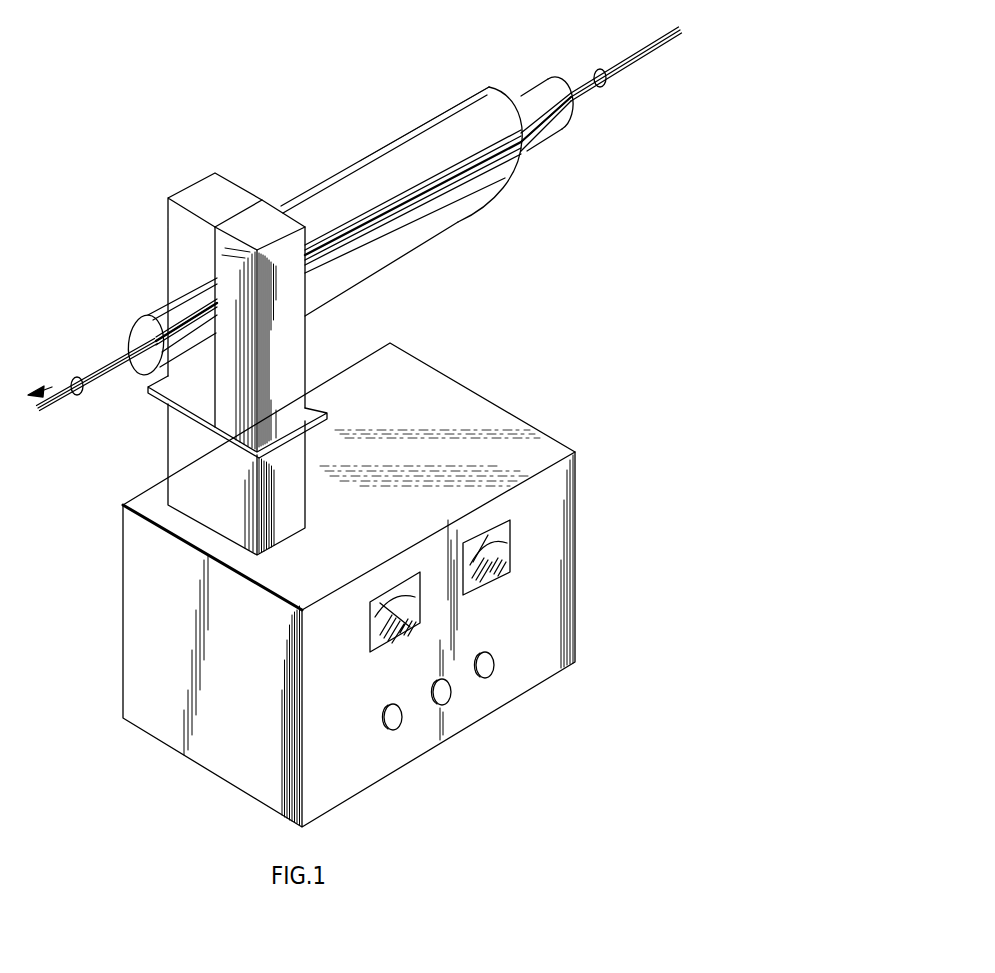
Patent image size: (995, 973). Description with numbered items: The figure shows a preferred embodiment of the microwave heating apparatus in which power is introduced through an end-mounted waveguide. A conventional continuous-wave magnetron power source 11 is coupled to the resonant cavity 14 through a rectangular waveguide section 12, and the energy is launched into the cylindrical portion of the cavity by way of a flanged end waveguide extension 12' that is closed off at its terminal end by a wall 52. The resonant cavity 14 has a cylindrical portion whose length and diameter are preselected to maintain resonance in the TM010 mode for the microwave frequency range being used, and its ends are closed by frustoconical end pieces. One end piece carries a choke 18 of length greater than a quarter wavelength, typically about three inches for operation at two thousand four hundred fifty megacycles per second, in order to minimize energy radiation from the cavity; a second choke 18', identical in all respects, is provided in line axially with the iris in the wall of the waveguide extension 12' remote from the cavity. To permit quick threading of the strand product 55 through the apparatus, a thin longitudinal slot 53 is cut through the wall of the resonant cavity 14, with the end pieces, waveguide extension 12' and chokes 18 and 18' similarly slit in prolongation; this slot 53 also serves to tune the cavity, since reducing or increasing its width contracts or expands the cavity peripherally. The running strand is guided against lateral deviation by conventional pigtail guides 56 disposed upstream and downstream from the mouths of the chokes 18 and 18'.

The power source 11 is at (548, 575).
The rectangular waveguide section 12 is at (260, 465).
The flanged end waveguide extension 12' is at (304, 325).
The resonant cavity 14 is at (357, 207).
The choke 18 is at (558, 120).
The choke 18' is at (175, 332).
The wall 52 is at (215, 173).
The longitudinal slot 53 is at (418, 129).
The product 55 is at (107, 362).
The pigtail guides 56 is at (563, 55).